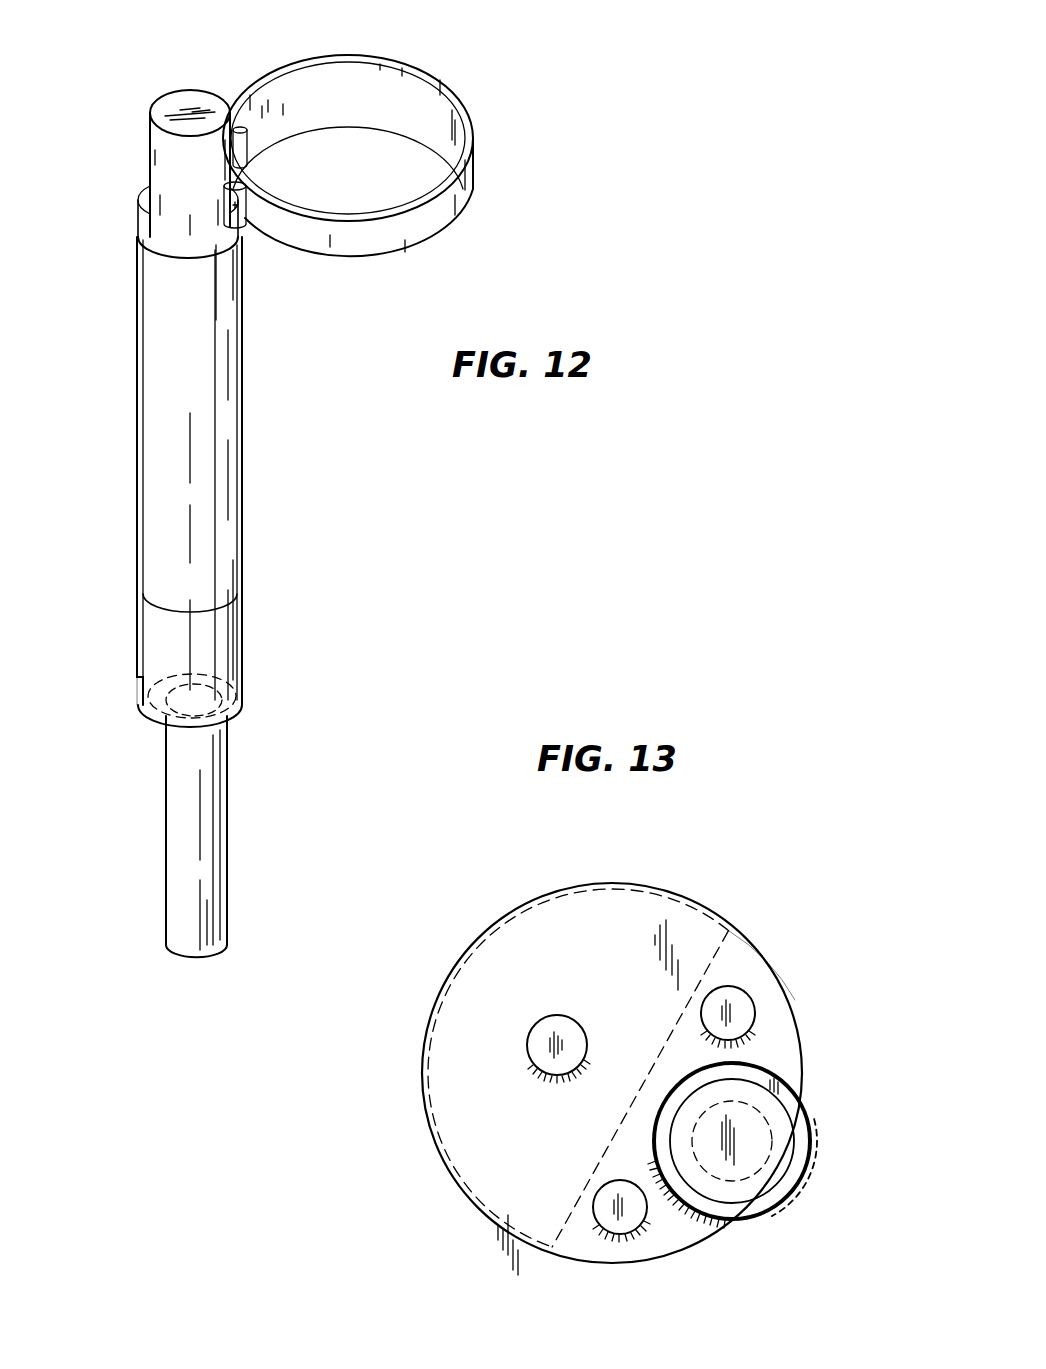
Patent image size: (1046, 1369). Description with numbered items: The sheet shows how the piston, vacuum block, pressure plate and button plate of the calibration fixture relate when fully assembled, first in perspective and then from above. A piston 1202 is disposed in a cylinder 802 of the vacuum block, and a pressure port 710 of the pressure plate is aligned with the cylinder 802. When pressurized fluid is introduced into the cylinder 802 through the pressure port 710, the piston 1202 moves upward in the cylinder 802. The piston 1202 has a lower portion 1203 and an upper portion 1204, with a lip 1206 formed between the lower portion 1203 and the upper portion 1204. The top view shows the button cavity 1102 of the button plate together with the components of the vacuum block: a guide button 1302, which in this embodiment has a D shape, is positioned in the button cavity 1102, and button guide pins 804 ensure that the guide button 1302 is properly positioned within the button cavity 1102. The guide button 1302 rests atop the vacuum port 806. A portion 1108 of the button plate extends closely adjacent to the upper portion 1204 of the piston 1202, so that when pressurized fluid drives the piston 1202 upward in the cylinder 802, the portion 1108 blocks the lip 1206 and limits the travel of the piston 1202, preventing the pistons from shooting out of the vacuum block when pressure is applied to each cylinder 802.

In FIG. 12, the pressure port 710 is at (200, 817).
In FIG. 13, the pressure port 710 is at (740, 1160).
In FIG. 12, the cylinder 802 is at (222, 639).
In FIG. 12, the button guide pins 804 is at (236, 127).
In FIG. 13, the button guide pins 804 is at (757, 1010).
In FIG. 13, the vacuum port 806 is at (565, 1015).
In FIG. 12, the button cavity 1102 is at (390, 135).
In FIG. 13, the button cavity 1102 is at (735, 965).
In FIG. 13, the portion of button plate 1108 is at (800, 1175).
In FIG. 12, the piston 1202 is at (243, 438).
In FIG. 13, the piston 1202 is at (775, 1070).
In FIG. 12, the lower portion 1203 is at (215, 513).
In FIG. 12, the upper portion 1204 is at (163, 172).
In FIG. 13, the upper portion 1204 is at (783, 1136).
In FIG. 12, the lip 1206 is at (148, 228).
In FIG. 13, the guide button 1302 is at (523, 930).